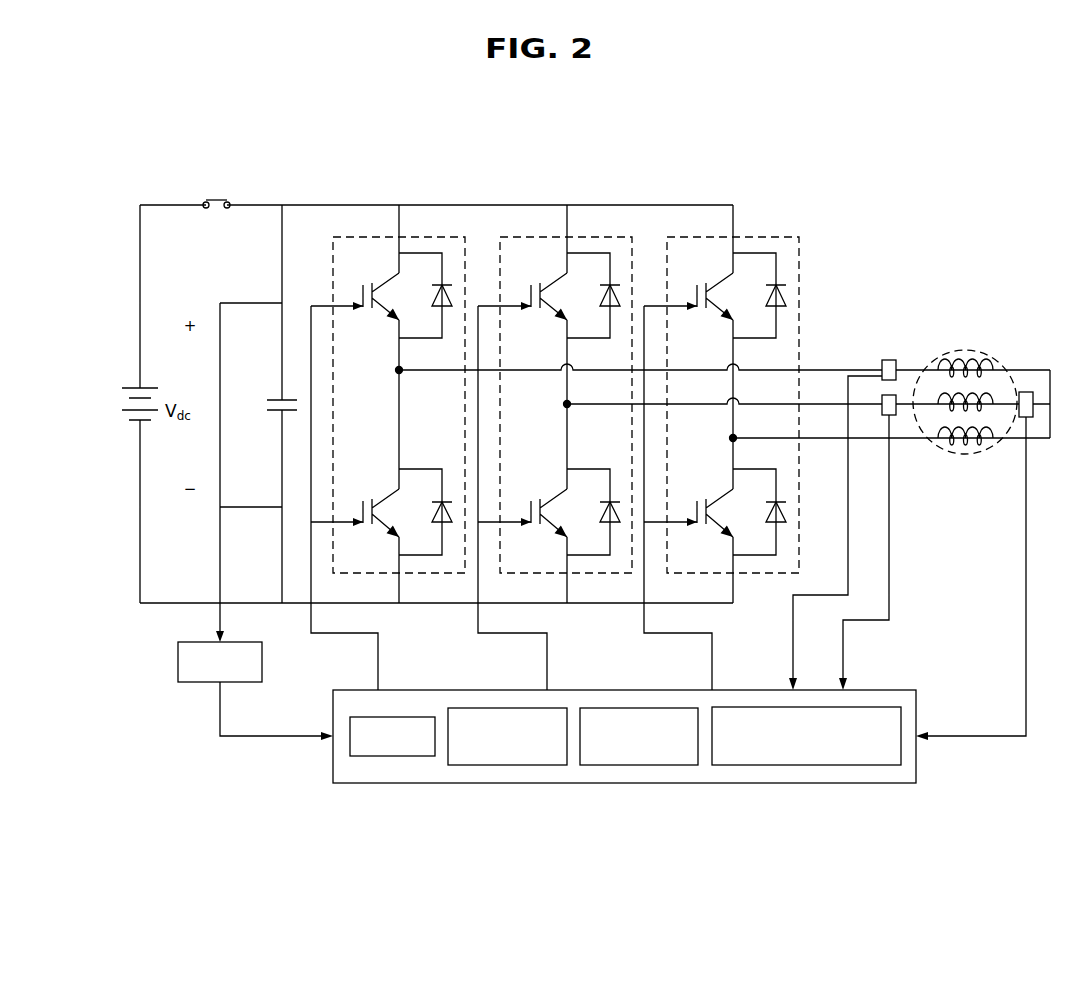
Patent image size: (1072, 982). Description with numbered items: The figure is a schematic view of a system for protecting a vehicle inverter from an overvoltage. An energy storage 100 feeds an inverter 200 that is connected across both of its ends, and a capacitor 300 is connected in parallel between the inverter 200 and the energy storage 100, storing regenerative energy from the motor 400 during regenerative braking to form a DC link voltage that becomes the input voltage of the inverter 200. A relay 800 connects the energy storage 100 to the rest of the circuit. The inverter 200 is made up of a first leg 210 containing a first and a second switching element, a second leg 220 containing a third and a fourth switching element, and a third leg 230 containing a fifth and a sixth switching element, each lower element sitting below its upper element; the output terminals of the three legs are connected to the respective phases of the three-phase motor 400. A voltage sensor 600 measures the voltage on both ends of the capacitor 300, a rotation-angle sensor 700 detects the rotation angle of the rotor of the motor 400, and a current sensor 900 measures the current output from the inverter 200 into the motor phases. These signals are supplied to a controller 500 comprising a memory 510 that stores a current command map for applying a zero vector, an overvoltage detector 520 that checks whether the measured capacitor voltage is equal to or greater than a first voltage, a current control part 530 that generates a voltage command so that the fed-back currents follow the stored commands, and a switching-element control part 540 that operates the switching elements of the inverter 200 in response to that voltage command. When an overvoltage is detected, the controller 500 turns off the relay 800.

The energy storage 100 is at (140, 378).
The inverter 200 is at (452, 165).
The first leg 210 is at (440, 237).
The second leg 220 is at (538, 237).
The third leg 230 is at (690, 237).
The capacitor 300 is at (272, 398).
The motor 400 is at (975, 349).
The controller 500 is at (333, 768).
The memory 510 is at (392, 757).
The overvoltage detector 520 is at (507, 766).
The current control part 530 is at (645, 766).
The switching-element control part 540 is at (777, 766).
The voltage sensor 600 is at (255, 691).
The rotation-angle sensor 700 is at (1027, 392).
The relay 800 is at (217, 200).
The current sensor 900 is at (898, 395).